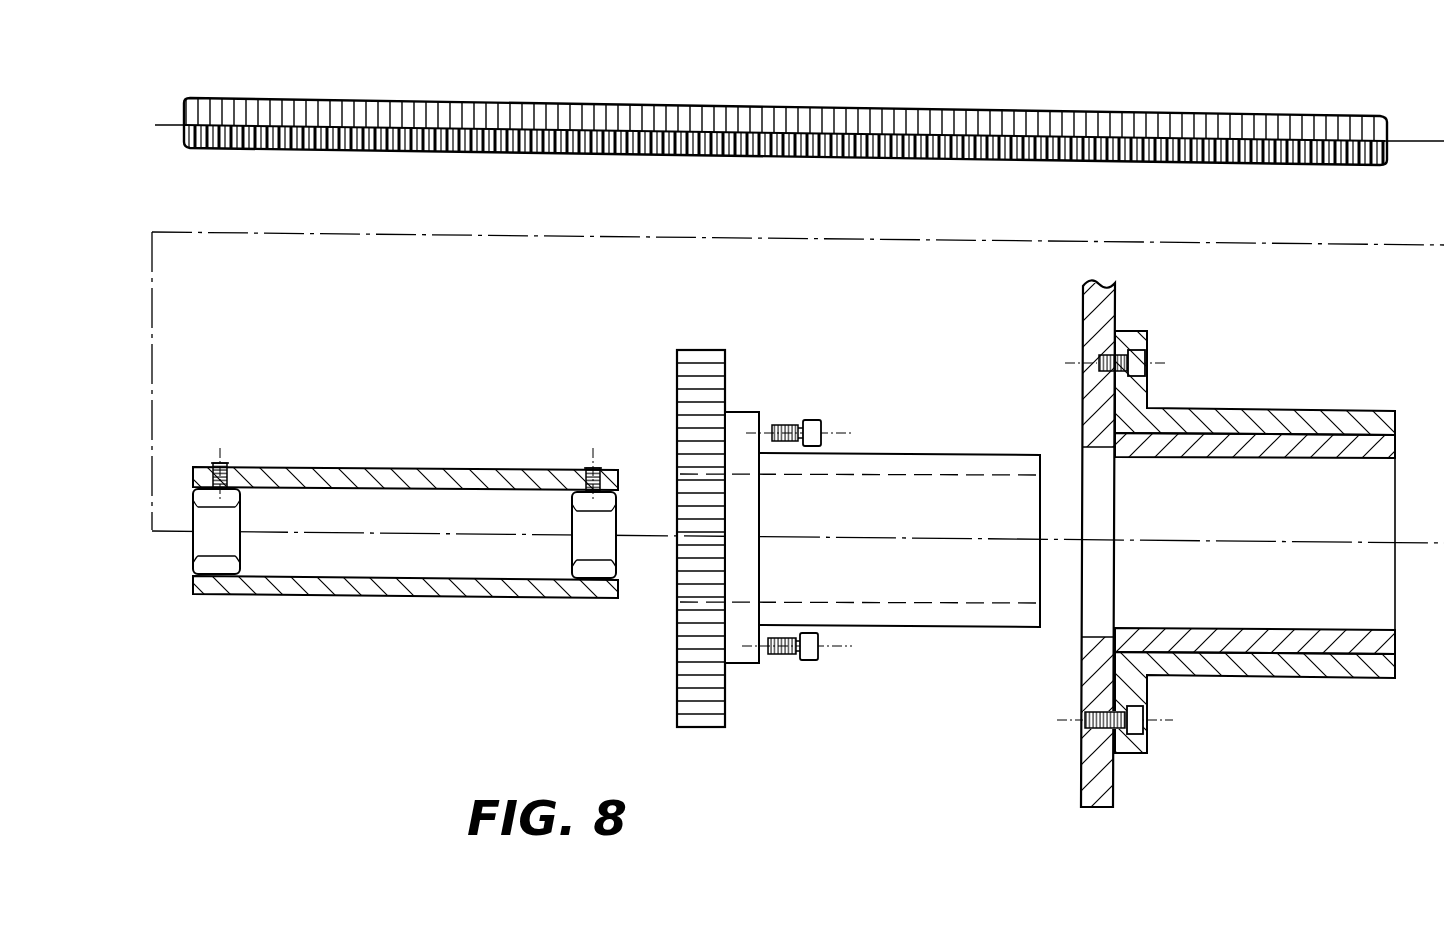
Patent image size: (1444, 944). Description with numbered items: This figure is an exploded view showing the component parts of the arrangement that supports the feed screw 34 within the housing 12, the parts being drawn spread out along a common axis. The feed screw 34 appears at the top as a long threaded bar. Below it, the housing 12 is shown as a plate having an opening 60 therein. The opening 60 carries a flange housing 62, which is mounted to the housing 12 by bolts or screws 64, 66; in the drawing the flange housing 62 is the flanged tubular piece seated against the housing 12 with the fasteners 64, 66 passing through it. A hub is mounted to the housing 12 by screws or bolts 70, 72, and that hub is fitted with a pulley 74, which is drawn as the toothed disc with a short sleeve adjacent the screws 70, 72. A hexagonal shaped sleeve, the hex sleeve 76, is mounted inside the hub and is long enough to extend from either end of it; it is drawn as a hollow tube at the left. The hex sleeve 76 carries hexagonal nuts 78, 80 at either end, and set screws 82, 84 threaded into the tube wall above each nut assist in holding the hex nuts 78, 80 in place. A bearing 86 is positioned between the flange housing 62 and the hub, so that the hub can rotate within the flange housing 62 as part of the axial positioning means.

The feed screw 34 is at (895, 128).
The housing 12 is at (1093, 306).
The opening 60 is at (1082, 606).
The flange housing 62 is at (1313, 668).
The bolt or screw 64 is at (912, 455).
The bolt or screw 66 is at (1137, 725).
The screw or bolt 70 is at (808, 660).
The screw or bolt 72 is at (812, 421).
The pulley 74 is at (688, 376).
The hex sleeve 76 is at (368, 467).
The hexagonal nut 78 is at (217, 566).
The hexagonal nut 80 is at (596, 568).
The set screw 82 is at (218, 463).
The set screw 84 is at (598, 466).
The bearing 86 is at (1268, 452).